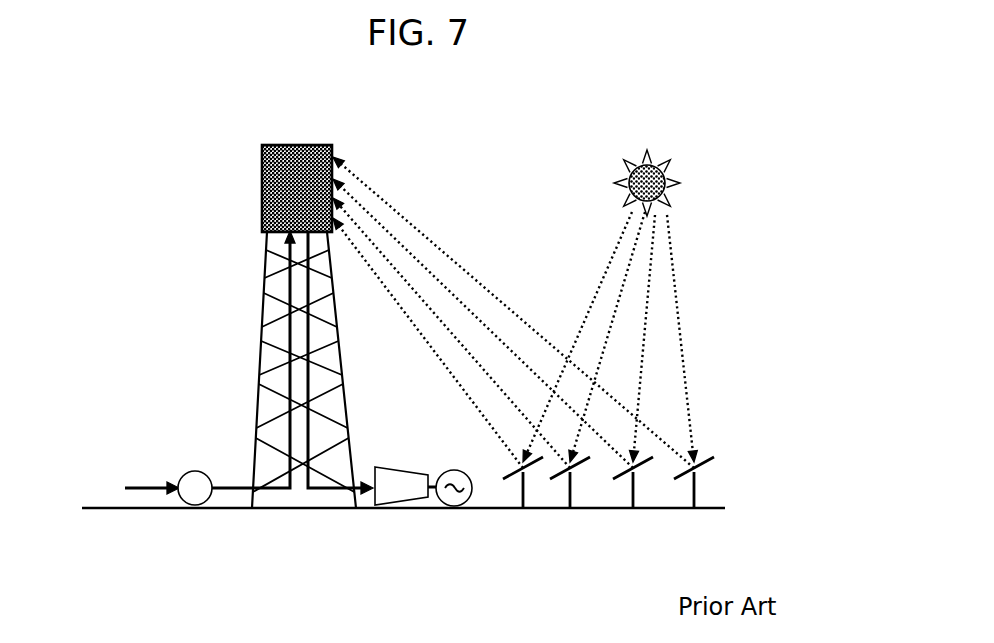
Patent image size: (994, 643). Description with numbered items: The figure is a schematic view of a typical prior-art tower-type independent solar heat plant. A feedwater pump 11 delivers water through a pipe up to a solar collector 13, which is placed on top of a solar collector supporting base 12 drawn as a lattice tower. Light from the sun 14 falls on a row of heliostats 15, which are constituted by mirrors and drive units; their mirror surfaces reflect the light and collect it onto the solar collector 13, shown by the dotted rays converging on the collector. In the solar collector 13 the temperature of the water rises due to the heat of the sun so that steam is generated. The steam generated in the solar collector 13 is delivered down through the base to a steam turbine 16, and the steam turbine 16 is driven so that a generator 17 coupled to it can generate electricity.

The feedwater pump 11 is at (187, 477).
The solar collector supporting base 12 is at (262, 335).
The solar collector 13 is at (274, 188).
The sun 14 is at (658, 174).
The heliostats 15 is at (700, 467).
The steam turbine 16 is at (389, 486).
The generator 17 is at (460, 500).